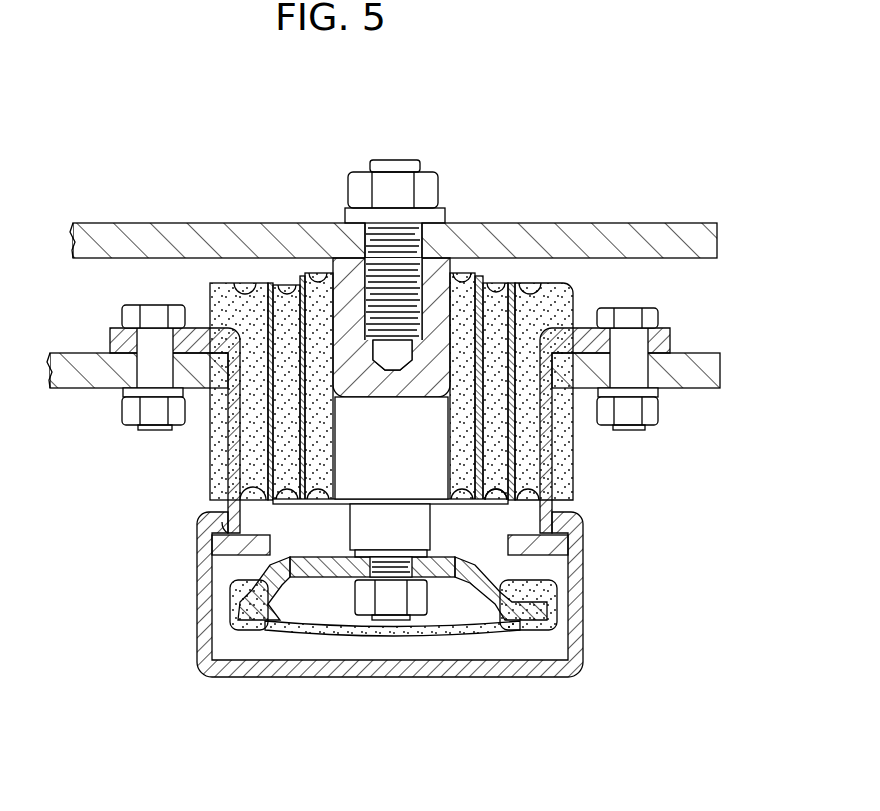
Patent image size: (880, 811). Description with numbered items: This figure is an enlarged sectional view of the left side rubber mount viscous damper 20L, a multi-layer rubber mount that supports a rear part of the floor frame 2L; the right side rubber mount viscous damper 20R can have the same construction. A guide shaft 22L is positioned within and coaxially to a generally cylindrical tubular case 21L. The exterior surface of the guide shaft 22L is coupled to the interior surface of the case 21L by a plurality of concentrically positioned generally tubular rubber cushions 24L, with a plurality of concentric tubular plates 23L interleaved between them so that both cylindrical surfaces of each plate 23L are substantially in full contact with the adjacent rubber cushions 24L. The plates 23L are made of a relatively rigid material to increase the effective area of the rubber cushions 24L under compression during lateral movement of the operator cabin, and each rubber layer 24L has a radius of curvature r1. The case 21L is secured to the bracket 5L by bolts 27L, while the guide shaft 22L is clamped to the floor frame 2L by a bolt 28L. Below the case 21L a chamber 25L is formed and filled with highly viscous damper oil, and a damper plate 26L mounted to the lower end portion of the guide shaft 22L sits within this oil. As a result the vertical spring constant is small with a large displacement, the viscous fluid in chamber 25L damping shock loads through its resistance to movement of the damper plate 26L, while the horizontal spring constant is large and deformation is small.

The floor frame 2L is at (608, 235).
The bracket 5L is at (705, 352).
The left side rubber mount viscous damper 20L is at (321, 599).
The right side rubber mount viscous damper 20R is at (178, 590).
The tubular case 21L is at (550, 462).
The guide shaft 22L is at (350, 442).
The tubular plates 23L is at (513, 283).
The tubular rubber cushions 24L is at (317, 280).
The chamber 25L is at (465, 648).
The damper plate 26L is at (283, 613).
The bolts 27L is at (628, 318).
The bolt 28L is at (357, 187).
The radius of curvature r1 is at (500, 482).